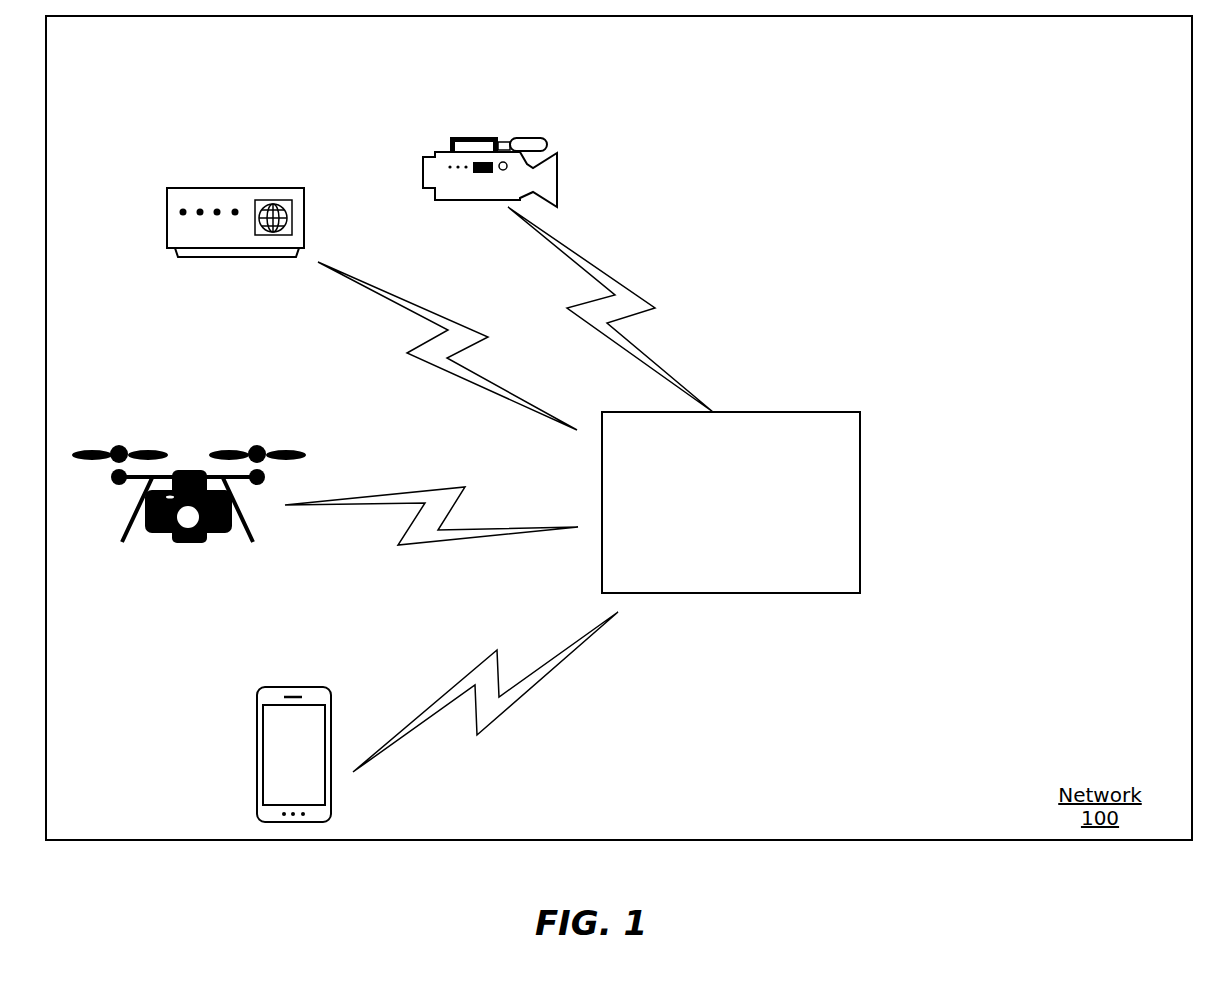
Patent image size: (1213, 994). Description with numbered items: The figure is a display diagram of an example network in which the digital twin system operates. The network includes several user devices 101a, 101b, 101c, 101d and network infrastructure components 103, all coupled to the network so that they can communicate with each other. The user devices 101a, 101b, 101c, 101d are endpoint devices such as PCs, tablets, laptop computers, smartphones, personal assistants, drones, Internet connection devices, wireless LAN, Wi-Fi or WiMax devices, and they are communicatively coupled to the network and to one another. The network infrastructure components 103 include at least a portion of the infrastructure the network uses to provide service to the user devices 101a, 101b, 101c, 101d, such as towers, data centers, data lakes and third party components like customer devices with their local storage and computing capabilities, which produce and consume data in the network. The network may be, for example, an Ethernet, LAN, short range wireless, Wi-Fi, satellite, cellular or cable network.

The user device 101a is at (548, 137).
The user device 101b is at (210, 189).
The user device 101c is at (130, 451).
The user device 101d is at (290, 686).
The network infrastructure components 103 is at (862, 428).